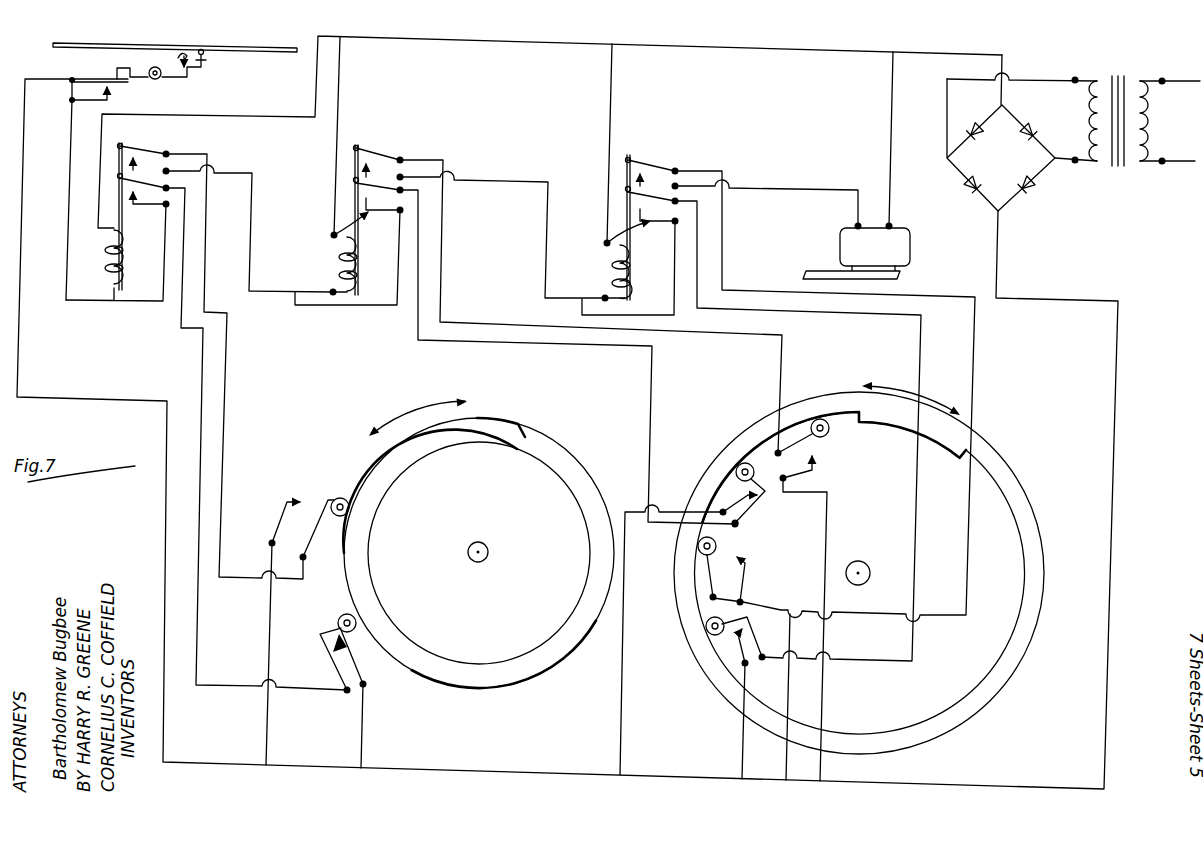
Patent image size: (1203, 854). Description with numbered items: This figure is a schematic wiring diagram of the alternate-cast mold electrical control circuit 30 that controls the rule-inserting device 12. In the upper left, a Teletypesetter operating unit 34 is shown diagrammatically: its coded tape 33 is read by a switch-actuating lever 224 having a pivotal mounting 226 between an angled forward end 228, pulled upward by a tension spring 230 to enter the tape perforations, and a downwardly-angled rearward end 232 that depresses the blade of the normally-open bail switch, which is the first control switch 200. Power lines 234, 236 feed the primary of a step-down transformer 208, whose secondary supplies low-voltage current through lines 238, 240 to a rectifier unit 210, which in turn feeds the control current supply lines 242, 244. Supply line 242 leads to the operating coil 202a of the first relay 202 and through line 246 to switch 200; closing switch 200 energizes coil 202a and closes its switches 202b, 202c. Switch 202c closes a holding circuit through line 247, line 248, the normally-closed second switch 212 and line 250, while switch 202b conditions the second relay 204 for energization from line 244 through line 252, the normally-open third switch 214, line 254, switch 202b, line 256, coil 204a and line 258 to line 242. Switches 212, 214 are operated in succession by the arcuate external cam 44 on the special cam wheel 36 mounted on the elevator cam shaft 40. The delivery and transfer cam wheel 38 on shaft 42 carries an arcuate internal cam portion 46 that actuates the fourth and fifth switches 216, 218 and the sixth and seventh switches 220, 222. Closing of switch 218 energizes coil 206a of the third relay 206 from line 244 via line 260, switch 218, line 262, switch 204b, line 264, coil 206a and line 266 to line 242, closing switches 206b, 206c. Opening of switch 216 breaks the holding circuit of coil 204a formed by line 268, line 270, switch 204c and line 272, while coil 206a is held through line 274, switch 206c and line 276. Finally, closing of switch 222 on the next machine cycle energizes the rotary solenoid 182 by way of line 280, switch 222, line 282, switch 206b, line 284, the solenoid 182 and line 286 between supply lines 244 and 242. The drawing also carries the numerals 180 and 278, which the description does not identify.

The rule-inserting device 12 is at (57, 72).
The alternate-cast mold electrical control circuit 30 is at (1082, 250).
The Teletypesetter operating tape 33 is at (271, 53).
The Teletypesetter operating unit 34 is at (192, 82).
The special cam wheel 36 is at (562, 464).
The delivery and transfer cam wheel 38 is at (1033, 494).
The elevator cam shaft 40 is at (488, 553).
The delivery and transfer cam shaft 42 is at (866, 566).
The switch actuating portion 44 is at (478, 417).
The arcuate internal cam portion 46 is at (889, 424).
The plate 180 is at (820, 270).
The rotary solenoid 182 is at (912, 253).
The first control switch 200 is at (68, 88).
The first relay 202 is at (182, 146).
The first relay operating coil 202a is at (110, 264).
The upper first relay switch 202b is at (160, 136).
The lower first relay switch 202c is at (146, 209).
The second relay 204 is at (403, 153).
The second relay operating coil 204a is at (340, 256).
The upper second relay switch 204b is at (385, 133).
The lower second relay switch 204c is at (330, 234).
The third relay 206 is at (678, 161).
The third relay operating coil 206a is at (614, 262).
The upper third relay switch 206b is at (645, 156).
The lower third relay switch 206c is at (605, 241).
The step-down transformer 208 is at (1126, 60).
The rectifier unit 210 is at (1018, 208).
The second switch 212 is at (316, 651).
The third switch 214 is at (266, 530).
The fourth switch 216 is at (716, 489).
The fifth switch 218 is at (769, 438).
The sixth switch 220 is at (732, 675).
The seventh switch 222 is at (697, 612).
The switch-actuating lever 224 is at (204, 70).
The pivotal mounting 226 is at (148, 79).
The angled forward end 228 is at (198, 23).
The tension spring 230 is at (180, 52).
The downwardly-angled rearward end 232 is at (114, 76).
The power line 234 is at (1165, 84).
The power line 236 is at (1182, 146).
The line 238 is at (1060, 79).
The line 240 is at (1076, 158).
The control current supply line 242 is at (280, 117).
The control current supply line 244 is at (1072, 300).
The line 246 is at (67, 190).
The line 247 is at (135, 302).
The line 248 is at (181, 326).
The line 250 is at (365, 718).
The line 252 is at (265, 618).
The line 254 is at (228, 362).
The line 256 is at (255, 202).
The line 258 is at (342, 62).
The line 260 is at (822, 773).
The line 262 is at (443, 258).
The line 264 is at (515, 182).
The line 266 is at (610, 58).
The line 268 is at (618, 713).
The line 270 is at (567, 345).
The line 272 is at (392, 310).
The line 274 is at (740, 743).
The line 276 is at (840, 313).
The conductor 278 is at (578, 314).
The line 280 is at (786, 778).
The line 282 is at (724, 218).
The line 284 is at (790, 190).
The line 286 is at (889, 123).